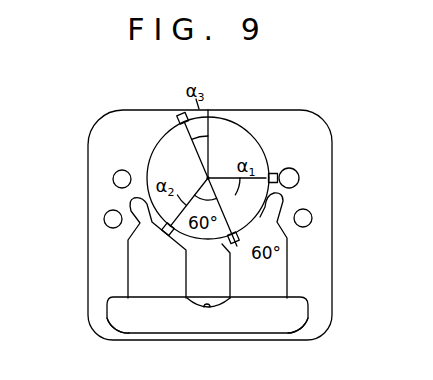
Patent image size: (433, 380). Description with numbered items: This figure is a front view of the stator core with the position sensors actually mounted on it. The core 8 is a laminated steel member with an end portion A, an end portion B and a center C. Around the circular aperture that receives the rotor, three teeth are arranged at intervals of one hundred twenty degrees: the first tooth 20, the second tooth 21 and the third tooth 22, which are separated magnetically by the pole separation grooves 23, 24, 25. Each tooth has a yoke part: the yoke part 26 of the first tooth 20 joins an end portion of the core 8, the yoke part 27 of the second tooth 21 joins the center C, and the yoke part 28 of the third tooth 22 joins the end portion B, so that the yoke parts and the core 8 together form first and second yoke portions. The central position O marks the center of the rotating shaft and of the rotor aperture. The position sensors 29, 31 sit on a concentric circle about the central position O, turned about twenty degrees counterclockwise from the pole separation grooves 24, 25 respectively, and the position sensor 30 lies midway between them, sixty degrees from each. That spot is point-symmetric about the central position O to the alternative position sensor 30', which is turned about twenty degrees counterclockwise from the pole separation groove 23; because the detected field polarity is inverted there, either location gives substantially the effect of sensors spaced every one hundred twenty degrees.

The core 8 is at (162, 327).
The first tooth 20 is at (250, 138).
The second tooth 21 is at (230, 255).
The third tooth 22 is at (155, 148).
The pole separation groove 23 is at (203, 111).
The pole separation groove 24 is at (208, 178).
The pole separation groove 25 is at (208, 178).
The yoke part 26 is at (323, 305).
The yoke part 27 is at (230, 255).
The yoke part 28 is at (100, 280).
The position sensor 29 is at (274, 173).
The position sensor 30 is at (284, 238).
The position sensor 30' is at (169, 101).
The position sensor 31 is at (166, 236).
The end portion A is at (307, 318).
The end portion B is at (105, 320).
The center C is at (207, 308).
The central position O is at (216, 163).